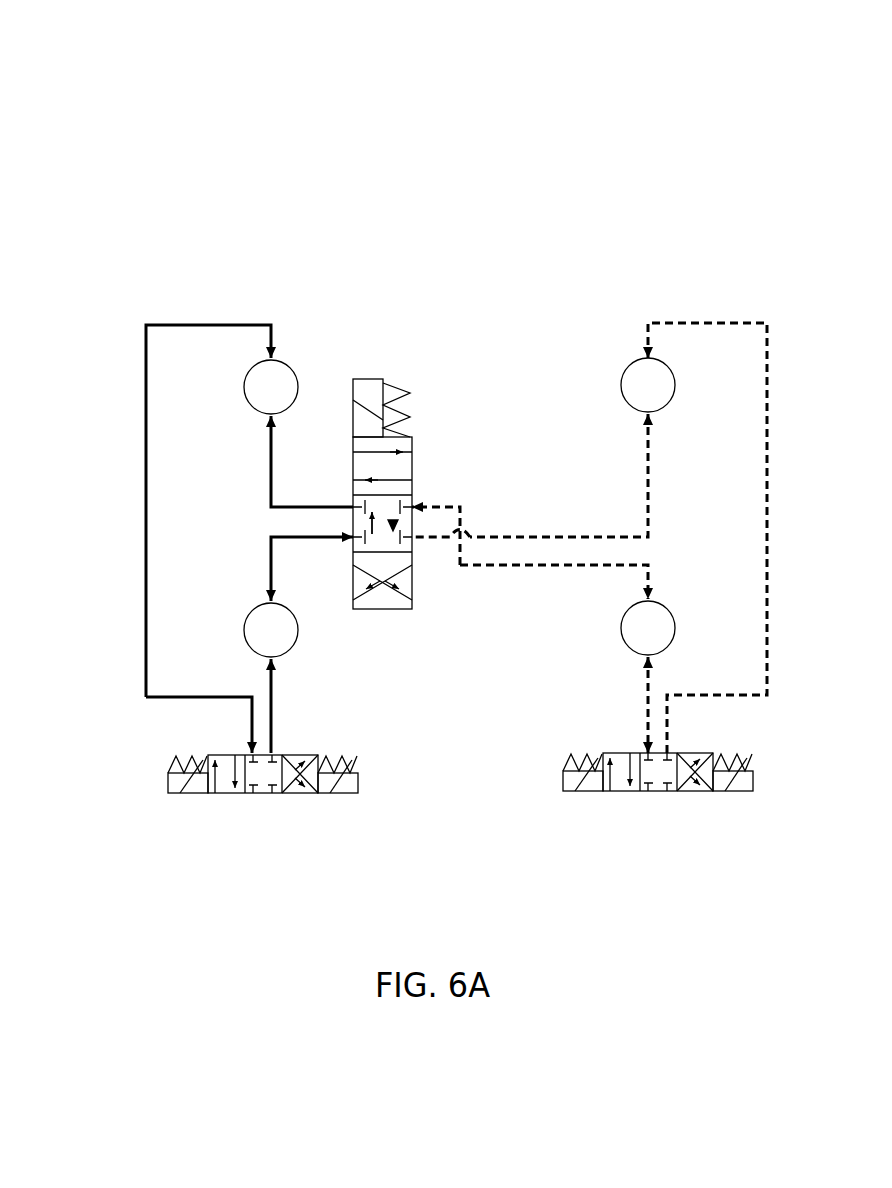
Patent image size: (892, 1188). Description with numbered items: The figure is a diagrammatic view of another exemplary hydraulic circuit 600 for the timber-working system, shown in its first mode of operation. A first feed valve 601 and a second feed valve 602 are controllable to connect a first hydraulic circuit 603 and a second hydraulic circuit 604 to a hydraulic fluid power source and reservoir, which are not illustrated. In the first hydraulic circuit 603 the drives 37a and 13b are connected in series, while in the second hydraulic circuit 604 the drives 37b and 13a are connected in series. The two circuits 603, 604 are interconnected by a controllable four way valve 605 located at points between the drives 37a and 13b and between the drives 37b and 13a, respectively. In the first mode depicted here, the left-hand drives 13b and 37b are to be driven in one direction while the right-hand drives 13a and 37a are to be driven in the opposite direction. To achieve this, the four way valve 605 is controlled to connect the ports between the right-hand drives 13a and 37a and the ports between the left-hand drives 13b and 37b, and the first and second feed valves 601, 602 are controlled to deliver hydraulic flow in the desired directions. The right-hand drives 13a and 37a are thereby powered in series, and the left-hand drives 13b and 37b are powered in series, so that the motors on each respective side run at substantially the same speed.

The hydraulic circuit 600 is at (112, 62).
The first feed valve 601 is at (208, 793).
The second feed valve 602 is at (668, 792).
The first hydraulic circuit 603 is at (146, 487).
The second hydraulic circuit 604 is at (716, 322).
The four way valve 605 is at (367, 378).
The RH drive 13a is at (633, 362).
The LH drive 13b is at (247, 371).
The RH drive 37a is at (622, 628).
The LH drive 37b is at (262, 605).